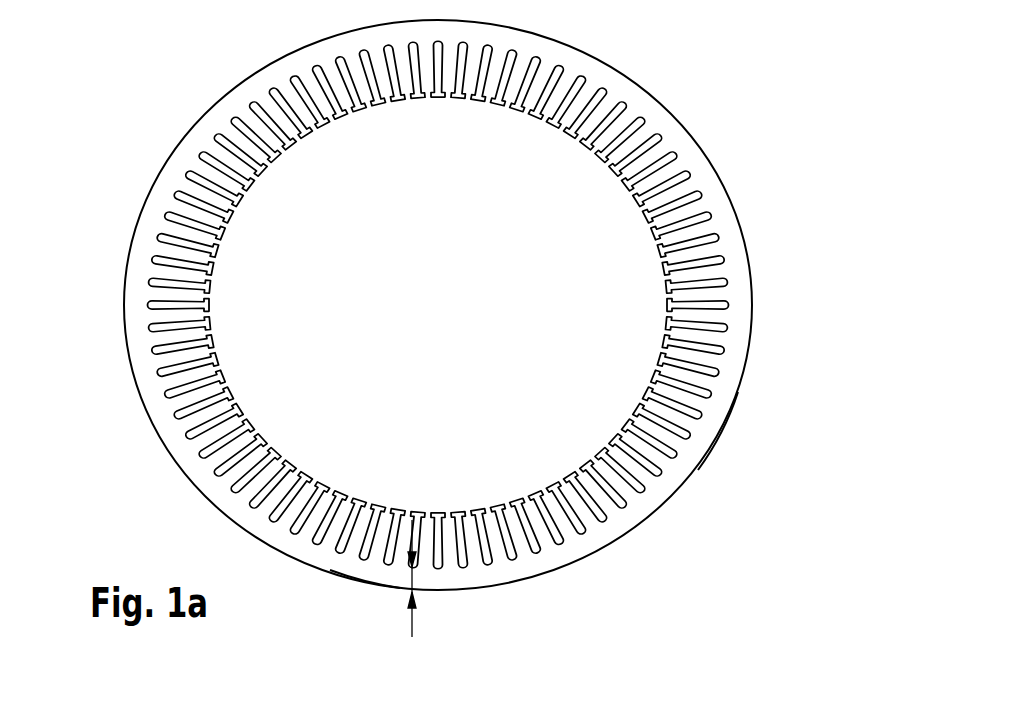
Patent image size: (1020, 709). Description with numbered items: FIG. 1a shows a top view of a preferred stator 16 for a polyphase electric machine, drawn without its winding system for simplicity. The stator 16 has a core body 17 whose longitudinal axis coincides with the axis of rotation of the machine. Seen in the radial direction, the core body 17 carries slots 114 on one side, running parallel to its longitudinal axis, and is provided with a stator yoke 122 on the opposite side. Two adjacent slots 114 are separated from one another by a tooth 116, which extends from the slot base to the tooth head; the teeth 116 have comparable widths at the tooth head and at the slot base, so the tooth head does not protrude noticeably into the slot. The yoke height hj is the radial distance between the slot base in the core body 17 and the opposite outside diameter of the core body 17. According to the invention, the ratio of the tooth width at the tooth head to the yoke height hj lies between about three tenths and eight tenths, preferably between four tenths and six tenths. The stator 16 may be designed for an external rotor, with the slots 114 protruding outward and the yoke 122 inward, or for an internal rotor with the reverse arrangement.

The stator 16 is at (593, 68).
The core body 17 is at (712, 420).
The slot 114 is at (716, 258).
The tooth 116 is at (716, 293).
The stator yoke 122 is at (362, 573).
The yoke height hj is at (416, 581).